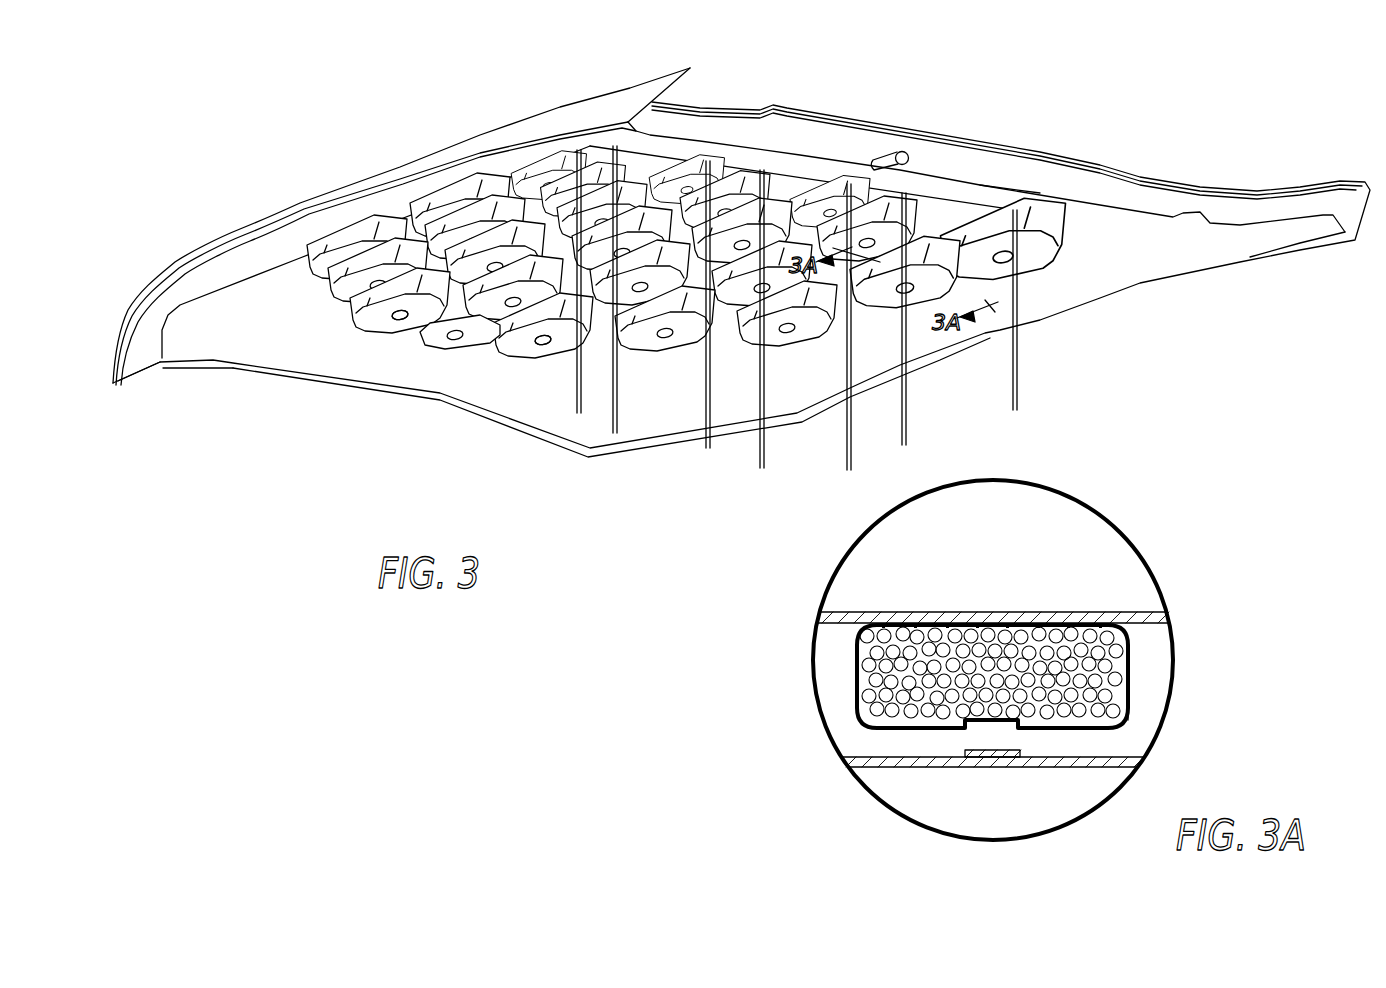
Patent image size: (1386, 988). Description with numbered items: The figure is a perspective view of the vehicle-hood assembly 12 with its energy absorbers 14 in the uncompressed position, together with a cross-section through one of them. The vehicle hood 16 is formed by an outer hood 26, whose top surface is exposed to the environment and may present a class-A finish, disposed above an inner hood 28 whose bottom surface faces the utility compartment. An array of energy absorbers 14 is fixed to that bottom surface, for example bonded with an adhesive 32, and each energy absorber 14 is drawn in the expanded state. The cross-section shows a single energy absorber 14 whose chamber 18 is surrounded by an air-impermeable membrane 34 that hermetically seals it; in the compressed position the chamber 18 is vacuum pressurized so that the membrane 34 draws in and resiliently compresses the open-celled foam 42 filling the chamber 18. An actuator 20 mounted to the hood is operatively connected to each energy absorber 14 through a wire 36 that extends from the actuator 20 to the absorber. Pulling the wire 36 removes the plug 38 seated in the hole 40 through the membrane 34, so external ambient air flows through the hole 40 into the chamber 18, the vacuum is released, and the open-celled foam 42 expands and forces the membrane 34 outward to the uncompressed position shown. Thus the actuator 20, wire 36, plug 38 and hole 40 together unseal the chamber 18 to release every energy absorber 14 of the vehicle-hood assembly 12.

In FIG. 3, the vehicle-hood assembly 12 is at (873, 73).
In FIG. 3, the energy absorber 14 is at (520, 170).
In FIG. 3A, the energy absorber 14 is at (984, 701).
In FIG. 3, the vehicle hood 16 is at (1140, 170).
In FIG. 3A, the vehicle hood 16 is at (1043, 617).
In FIG. 3A, the chamber 18 is at (1133, 700).
In FIG. 3, the actuator 20 is at (902, 151).
In FIG. 3, the outer hood 26 is at (807, 108).
In FIG. 3, the inner hood 28 is at (752, 127).
In FIG. 3A, the adhesive 32 is at (955, 620).
In FIG. 3A, the membrane 34 is at (856, 663).
In FIG. 3, the wire 36 is at (903, 428).
In FIG. 3A, the wire 36 is at (1047, 767).
In FIG. 3A, the plug 38 is at (992, 758).
In FIG. 3, the hole 40 is at (540, 340).
In FIG. 3A, the hole 40 is at (972, 723).
In FIG. 3A, the open-celled foam 42 is at (1100, 643).